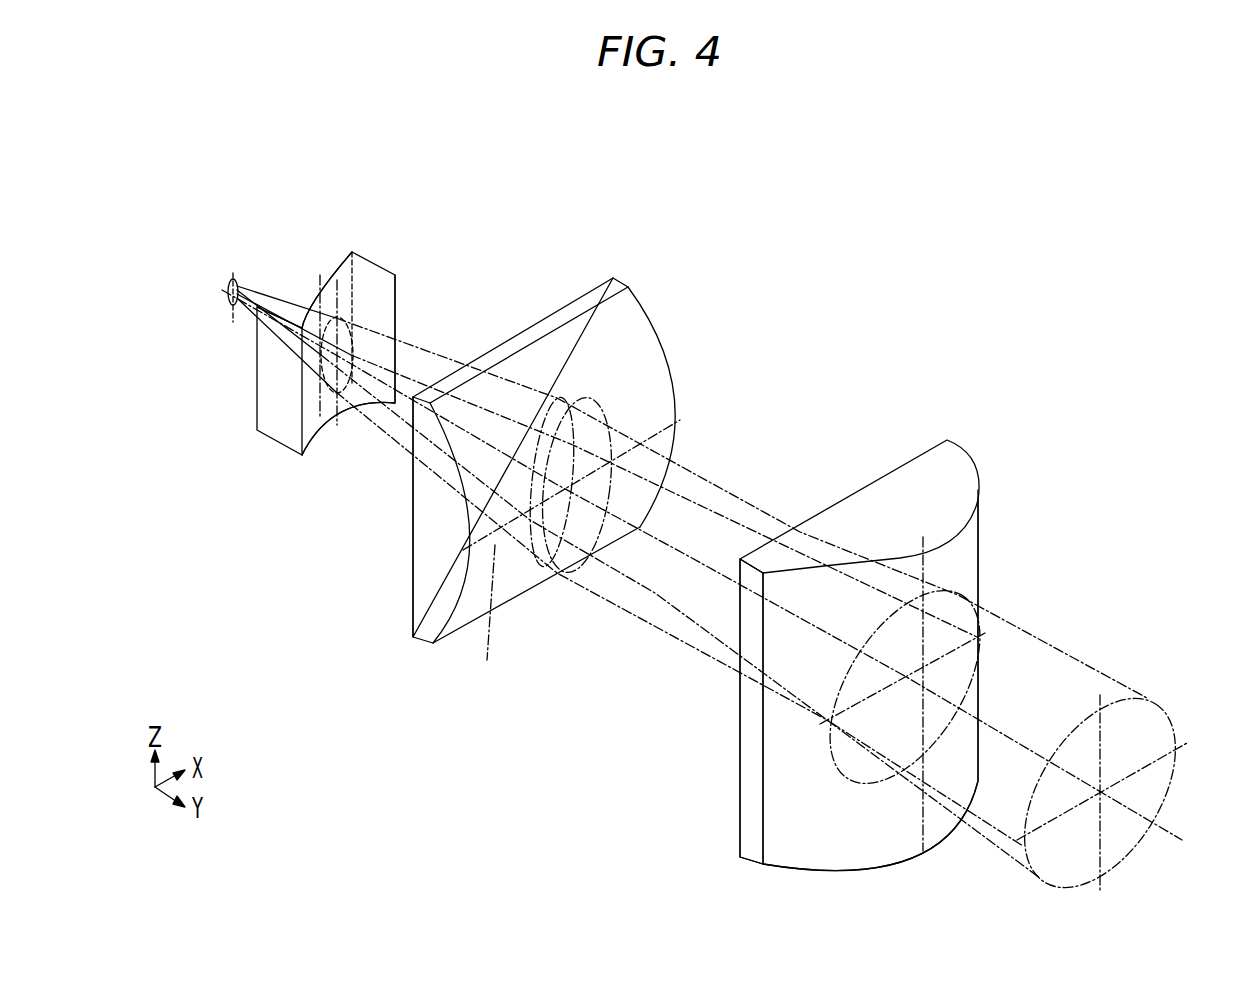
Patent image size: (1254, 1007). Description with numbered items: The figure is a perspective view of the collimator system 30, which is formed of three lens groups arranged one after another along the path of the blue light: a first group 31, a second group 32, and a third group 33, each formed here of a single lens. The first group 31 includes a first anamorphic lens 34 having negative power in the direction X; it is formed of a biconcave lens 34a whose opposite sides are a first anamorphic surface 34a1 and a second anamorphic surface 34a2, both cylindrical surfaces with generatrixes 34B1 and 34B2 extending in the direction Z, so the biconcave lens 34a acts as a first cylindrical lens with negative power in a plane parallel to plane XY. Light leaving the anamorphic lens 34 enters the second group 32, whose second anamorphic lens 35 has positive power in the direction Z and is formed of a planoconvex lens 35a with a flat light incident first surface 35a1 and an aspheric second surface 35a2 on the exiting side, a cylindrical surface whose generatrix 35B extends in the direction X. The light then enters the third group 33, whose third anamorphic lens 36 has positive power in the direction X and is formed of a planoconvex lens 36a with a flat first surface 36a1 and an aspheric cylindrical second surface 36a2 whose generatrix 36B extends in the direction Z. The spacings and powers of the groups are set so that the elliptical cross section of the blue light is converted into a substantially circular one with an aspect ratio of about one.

The collimator system 30 is at (642, 125).
The first group 31 is at (392, 258).
The second group 32 is at (668, 327).
The third group 33 is at (875, 405).
The first anamorphic lens 34 is at (357, 350).
The biconcave lens 34a is at (377, 315).
The first anamorphic surface 34a1 is at (333, 272).
The second anamorphic surface 34a2 is at (392, 334).
The generatrix 34B1 is at (318, 280).
The generatrix 34B2 is at (340, 308).
The second anamorphic lens 35 is at (496, 506).
The planoconvex lens 35a is at (496, 496).
The first surface 35a1 is at (412, 542).
The second surface 35a2 is at (523, 575).
The generatrix 35B is at (487, 660).
The third anamorphic lens 36 is at (820, 697).
The planoconvex lens 36a is at (820, 697).
The first surface 36a1 is at (737, 708).
The second surface 36a2 is at (817, 838).
The generatrix 36B is at (928, 840).